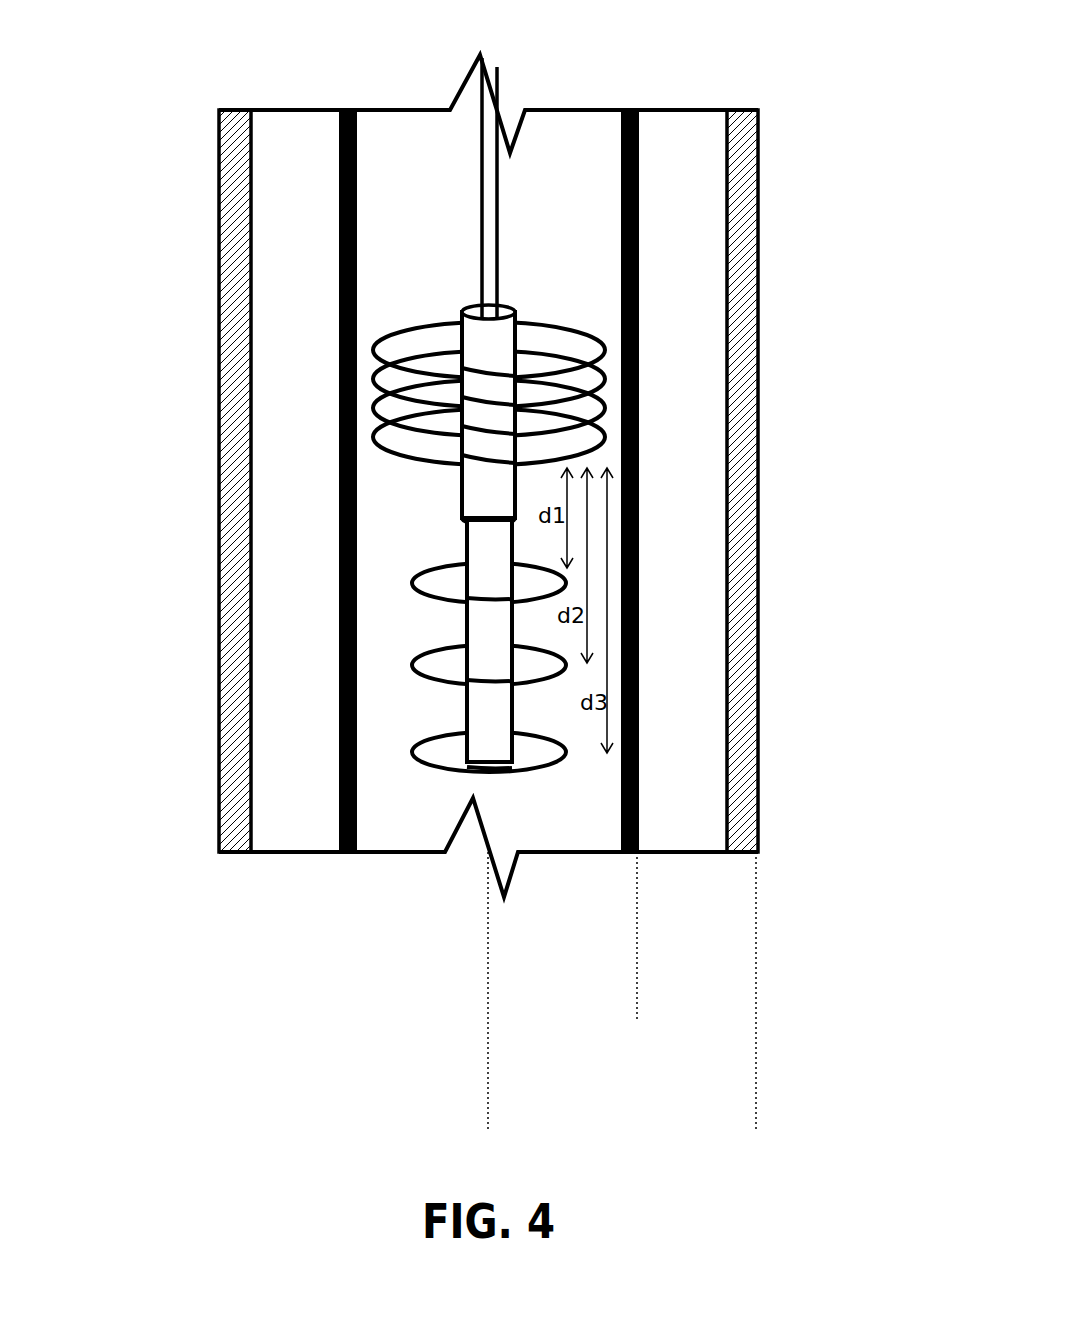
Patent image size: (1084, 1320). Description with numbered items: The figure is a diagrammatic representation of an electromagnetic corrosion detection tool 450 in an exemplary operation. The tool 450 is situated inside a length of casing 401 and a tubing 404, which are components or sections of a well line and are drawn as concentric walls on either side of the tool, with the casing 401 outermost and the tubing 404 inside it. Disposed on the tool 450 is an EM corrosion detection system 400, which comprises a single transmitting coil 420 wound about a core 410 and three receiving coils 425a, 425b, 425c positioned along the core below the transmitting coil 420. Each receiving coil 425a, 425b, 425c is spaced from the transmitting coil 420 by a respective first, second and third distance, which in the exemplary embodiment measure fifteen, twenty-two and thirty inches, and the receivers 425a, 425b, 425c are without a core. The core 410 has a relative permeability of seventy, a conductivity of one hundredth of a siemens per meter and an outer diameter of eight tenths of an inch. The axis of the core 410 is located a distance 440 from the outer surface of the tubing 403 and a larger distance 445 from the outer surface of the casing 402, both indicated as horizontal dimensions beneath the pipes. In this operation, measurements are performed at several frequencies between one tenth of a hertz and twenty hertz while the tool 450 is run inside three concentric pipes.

The EM corrosion detection system 400 is at (642, 302).
The casing 401 is at (205, 122).
The outer surface of the casing 402 is at (758, 98).
The outer surface of the tubing 403 is at (344, 92).
The tubing 404 is at (622, 98).
The core 410 is at (519, 292).
The transmitting coil 420 is at (330, 316).
The first receiving coil 425a is at (470, 641).
The second receiving coil 425b is at (470, 689).
The third receiving coil 425c is at (470, 736).
The distance from core axis to outer surface of the tubing 440 is at (637, 955).
The distance from core axis to outer surface of the casing 445 is at (756, 1103).
The EM corrosion detection tool 450 is at (792, 792).